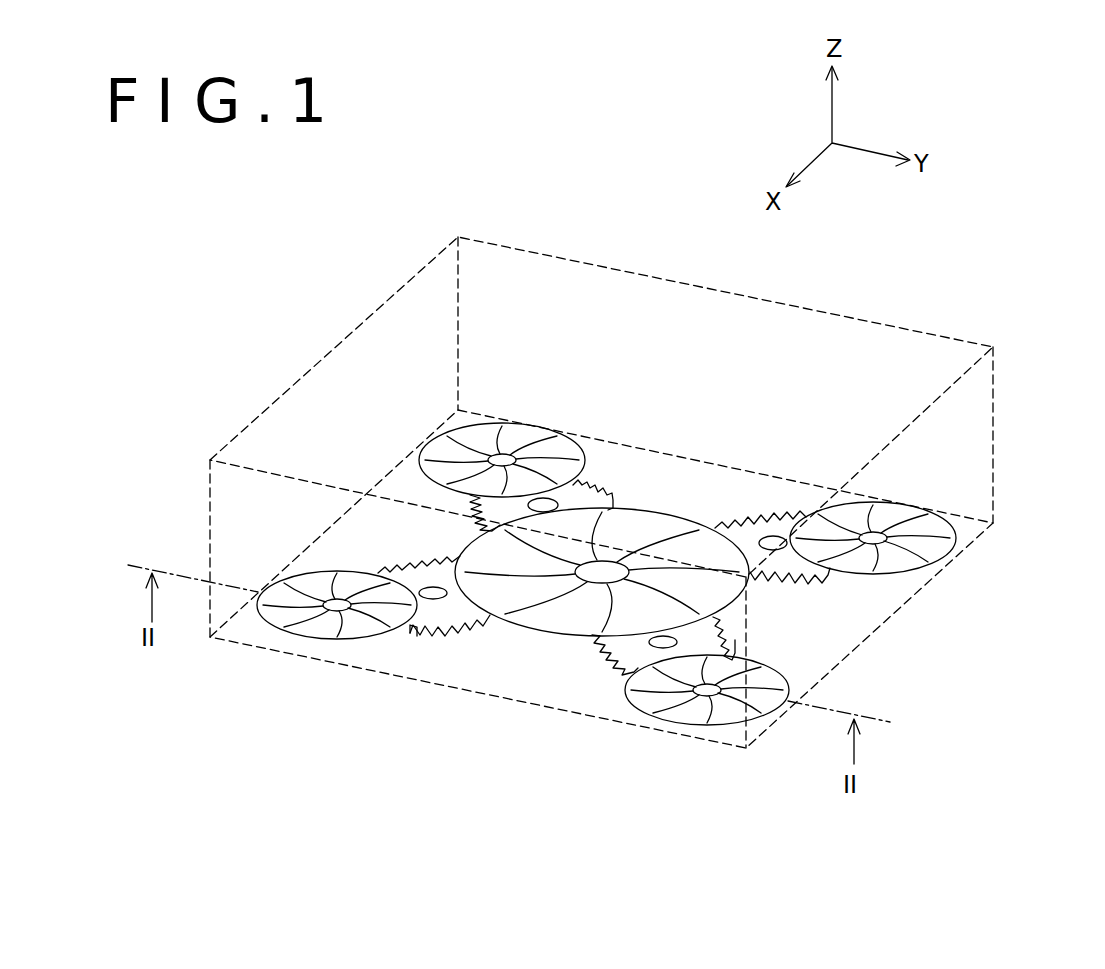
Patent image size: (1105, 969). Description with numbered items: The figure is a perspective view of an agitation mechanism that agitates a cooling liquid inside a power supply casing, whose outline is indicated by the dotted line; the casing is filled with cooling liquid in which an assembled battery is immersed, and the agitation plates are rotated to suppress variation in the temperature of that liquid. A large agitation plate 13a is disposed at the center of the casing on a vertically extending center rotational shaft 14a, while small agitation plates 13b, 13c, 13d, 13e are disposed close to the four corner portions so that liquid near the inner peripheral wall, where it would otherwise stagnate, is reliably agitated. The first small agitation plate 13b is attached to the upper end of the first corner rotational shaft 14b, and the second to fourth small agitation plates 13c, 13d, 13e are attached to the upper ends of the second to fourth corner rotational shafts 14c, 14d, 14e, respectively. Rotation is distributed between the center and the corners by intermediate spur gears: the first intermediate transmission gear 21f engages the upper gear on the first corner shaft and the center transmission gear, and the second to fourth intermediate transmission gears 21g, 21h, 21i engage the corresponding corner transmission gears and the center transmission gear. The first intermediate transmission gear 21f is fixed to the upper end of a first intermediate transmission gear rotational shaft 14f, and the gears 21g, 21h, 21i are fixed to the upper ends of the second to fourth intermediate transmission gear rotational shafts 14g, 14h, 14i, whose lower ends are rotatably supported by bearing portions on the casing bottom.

The large agitation plate 13a is at (548, 620).
The first small agitation plate 13b is at (280, 622).
The second small agitation plate 13c is at (445, 455).
The third small agitation plate 13d is at (933, 525).
The fourth small agitation plate 13e is at (768, 700).
The center rotational shaft 14a is at (603, 582).
The first corner rotational shaft 14b is at (337, 610).
The second corner rotational shaft 14c is at (497, 458).
The third corner rotational shaft 14d is at (880, 542).
The fourth corner rotational shaft 14e is at (708, 693).
The first intermediate transmission gear rotational shaft 14f is at (433, 596).
The second intermediate transmission gear rotational shaft 14g is at (548, 504).
The third intermediate transmission gear rotational shaft 14h is at (775, 543).
The fourth intermediate transmission gear rotational shaft 14i is at (660, 643).
The first intermediate transmission gear 21f is at (447, 619).
The second intermediate transmission gear 21g is at (600, 503).
The third intermediate transmission gear 21h is at (764, 516).
The fourth intermediate transmission gear 21i is at (737, 637).